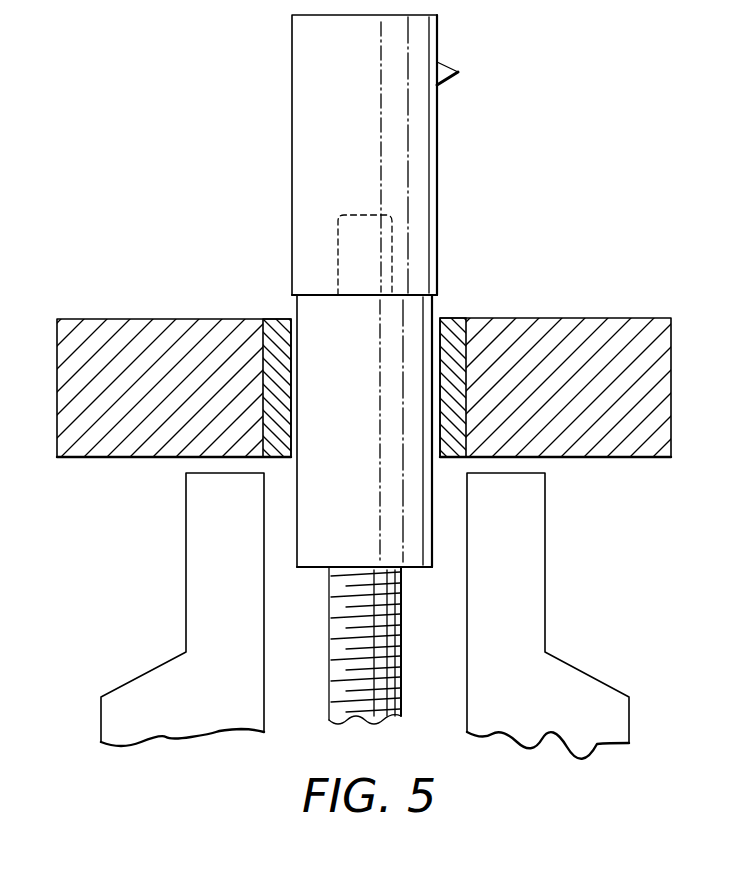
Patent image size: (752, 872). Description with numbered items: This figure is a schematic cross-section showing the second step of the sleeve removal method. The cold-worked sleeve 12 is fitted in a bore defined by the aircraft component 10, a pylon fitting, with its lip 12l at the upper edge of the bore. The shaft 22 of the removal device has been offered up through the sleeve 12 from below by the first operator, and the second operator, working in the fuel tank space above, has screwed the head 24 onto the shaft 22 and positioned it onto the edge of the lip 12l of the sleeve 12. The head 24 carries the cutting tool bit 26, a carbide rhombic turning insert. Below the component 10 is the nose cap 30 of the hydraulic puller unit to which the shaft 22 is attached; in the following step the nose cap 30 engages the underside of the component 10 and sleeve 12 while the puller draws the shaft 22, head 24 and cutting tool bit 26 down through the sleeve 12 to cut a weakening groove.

The aircraft component 10 is at (565, 318).
The sleeve 12 is at (453, 318).
The lip 12l is at (272, 318).
The shaft 22 is at (311, 569).
The head 24 is at (292, 28).
The cutting tool bit 26 is at (458, 72).
The nose cap 30 is at (101, 707).